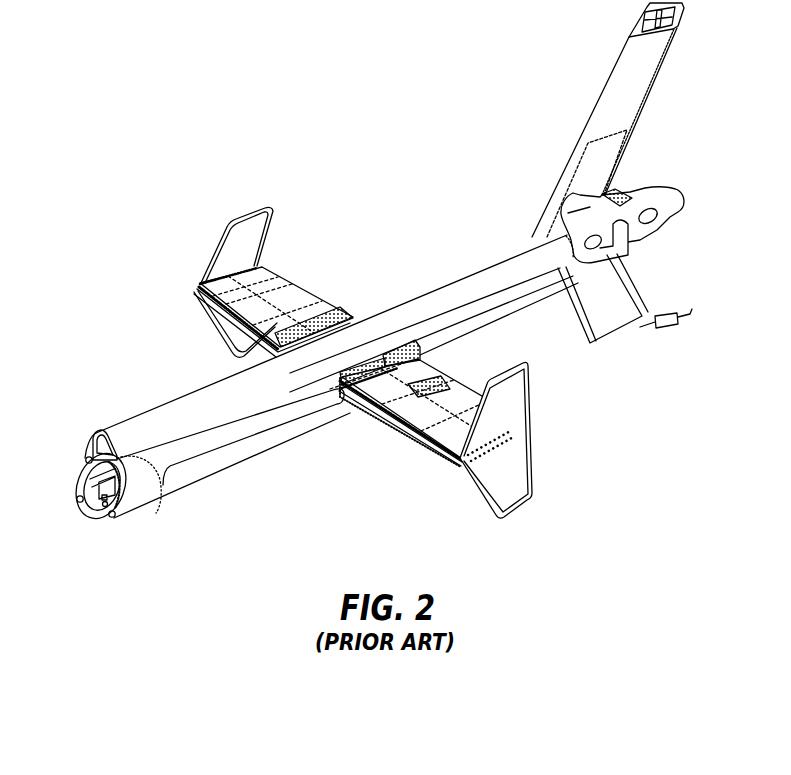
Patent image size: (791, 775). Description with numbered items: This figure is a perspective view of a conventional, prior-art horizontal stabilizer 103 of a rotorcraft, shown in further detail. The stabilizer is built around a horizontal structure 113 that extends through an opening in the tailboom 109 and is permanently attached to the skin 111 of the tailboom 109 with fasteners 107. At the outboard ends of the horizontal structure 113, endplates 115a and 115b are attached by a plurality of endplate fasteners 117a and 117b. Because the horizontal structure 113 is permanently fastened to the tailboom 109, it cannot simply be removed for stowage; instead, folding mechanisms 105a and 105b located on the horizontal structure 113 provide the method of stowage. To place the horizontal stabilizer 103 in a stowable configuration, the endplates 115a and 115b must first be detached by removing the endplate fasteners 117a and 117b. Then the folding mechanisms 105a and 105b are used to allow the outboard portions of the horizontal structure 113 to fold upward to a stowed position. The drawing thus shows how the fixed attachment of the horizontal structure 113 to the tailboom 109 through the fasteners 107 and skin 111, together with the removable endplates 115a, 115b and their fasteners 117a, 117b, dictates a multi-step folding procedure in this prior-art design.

The horizontal stabilizer 103 is at (393, 452).
The folding mechanism 105a is at (447, 383).
The folding mechanism 105b is at (326, 314).
The fasteners 107 is at (395, 350).
The tailboom 109 is at (226, 477).
The skin 111 is at (317, 383).
The horizontal structure 113 is at (277, 289).
The endplate 115a is at (501, 519).
The endplate 115b is at (232, 220).
The endplate fasteners 117a is at (510, 446).
The endplate fasteners 117b is at (198, 285).